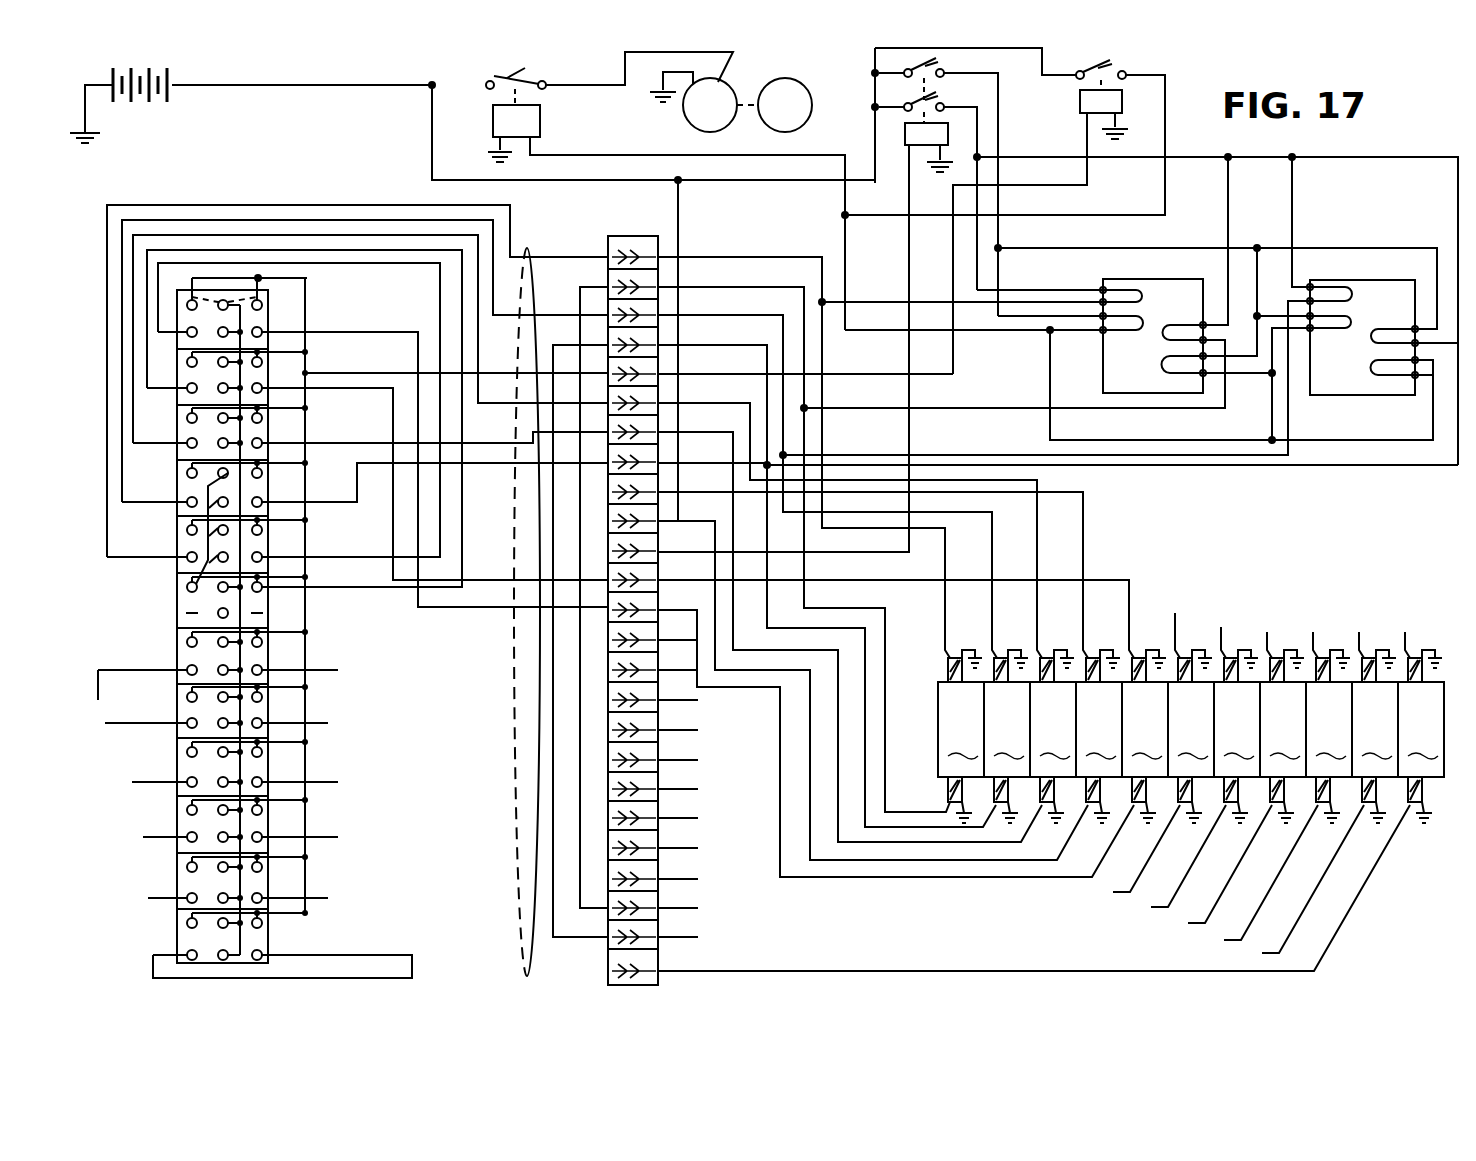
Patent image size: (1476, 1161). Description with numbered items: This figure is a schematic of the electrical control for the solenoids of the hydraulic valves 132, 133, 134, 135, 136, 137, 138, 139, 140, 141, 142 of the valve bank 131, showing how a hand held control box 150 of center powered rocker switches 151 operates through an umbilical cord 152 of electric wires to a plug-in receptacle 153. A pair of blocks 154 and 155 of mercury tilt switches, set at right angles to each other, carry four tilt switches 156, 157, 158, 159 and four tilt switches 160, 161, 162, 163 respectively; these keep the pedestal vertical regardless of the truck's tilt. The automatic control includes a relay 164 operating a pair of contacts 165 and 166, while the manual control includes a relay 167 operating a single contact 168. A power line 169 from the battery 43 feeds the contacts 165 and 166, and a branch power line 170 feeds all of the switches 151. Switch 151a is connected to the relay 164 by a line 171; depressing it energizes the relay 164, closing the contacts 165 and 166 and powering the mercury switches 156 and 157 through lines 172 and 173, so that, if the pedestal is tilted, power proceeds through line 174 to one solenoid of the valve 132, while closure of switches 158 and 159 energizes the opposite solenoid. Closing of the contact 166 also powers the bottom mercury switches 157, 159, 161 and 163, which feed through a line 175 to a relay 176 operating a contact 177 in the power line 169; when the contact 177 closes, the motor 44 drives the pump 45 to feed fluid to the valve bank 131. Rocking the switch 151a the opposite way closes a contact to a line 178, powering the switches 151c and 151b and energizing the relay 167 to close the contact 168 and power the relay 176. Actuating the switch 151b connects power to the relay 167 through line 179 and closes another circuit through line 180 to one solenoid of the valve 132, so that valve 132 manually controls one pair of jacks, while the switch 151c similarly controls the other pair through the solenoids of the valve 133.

The battery 43 is at (152, 108).
The pump driving motor 44 is at (692, 122).
The pump 45 is at (810, 120).
The valve bank 131 is at (1455, 682).
The hydraulic valve 132 is at (961, 736).
The hydraulic valve 133 is at (1007, 736).
The hydraulic valve 134 is at (1053, 736).
The hydraulic valve 135 is at (1099, 736).
The hydraulic valve 136 is at (1145, 736).
The hydraulic valve 137 is at (1191, 736).
The hydraulic valve 138 is at (1237, 736).
The hydraulic valve 139 is at (1283, 736).
The hydraulic valve 140 is at (1329, 736).
The hydraulic valve 141 is at (1375, 736).
The hydraulic valve 142 is at (1421, 736).
The hand held control box 150 is at (328, 300).
The center powered rocker switches 151 is at (190, 390).
The rocker switch 151a is at (178, 615).
The rocker switch 151b is at (190, 540).
The rocker switch 151c is at (182, 502).
The umbilical cord 152 is at (514, 780).
The plug-in receptacle 153 is at (598, 242).
The block of mercury tilt switches 154 is at (1160, 323).
The block of mercury tilt switches 155 is at (1365, 338).
The mercury tilt switch 156 is at (1134, 290).
The mercury tilt switch 157 is at (1128, 336).
The mercury tilt switch 158 is at (1184, 334).
The mercury tilt switch 159 is at (1168, 372).
The mercury tilt switch 160 is at (1325, 292).
The mercury tilt switch 161 is at (1340, 336).
The mercury tilt switch 162 is at (1395, 338).
The mercury tilt switch 163 is at (1384, 384).
The relay 164 is at (905, 145).
The relay contact 165 is at (938, 103).
The relay contact 166 is at (936, 64).
The relay 167 is at (1118, 112).
The relay contact 168 is at (1106, 60).
The power line 169 is at (302, 90).
The branch power line 170 is at (680, 230).
The line 171 is at (358, 580).
The line 172 is at (1000, 246).
The line 173 is at (978, 270).
The line 174 is at (925, 303).
The line 175 is at (990, 332).
The relay 176 is at (543, 124).
The relay contact 177 is at (530, 73).
The line 178 is at (208, 567).
The line 179 is at (380, 374).
The line 180 is at (106, 215).